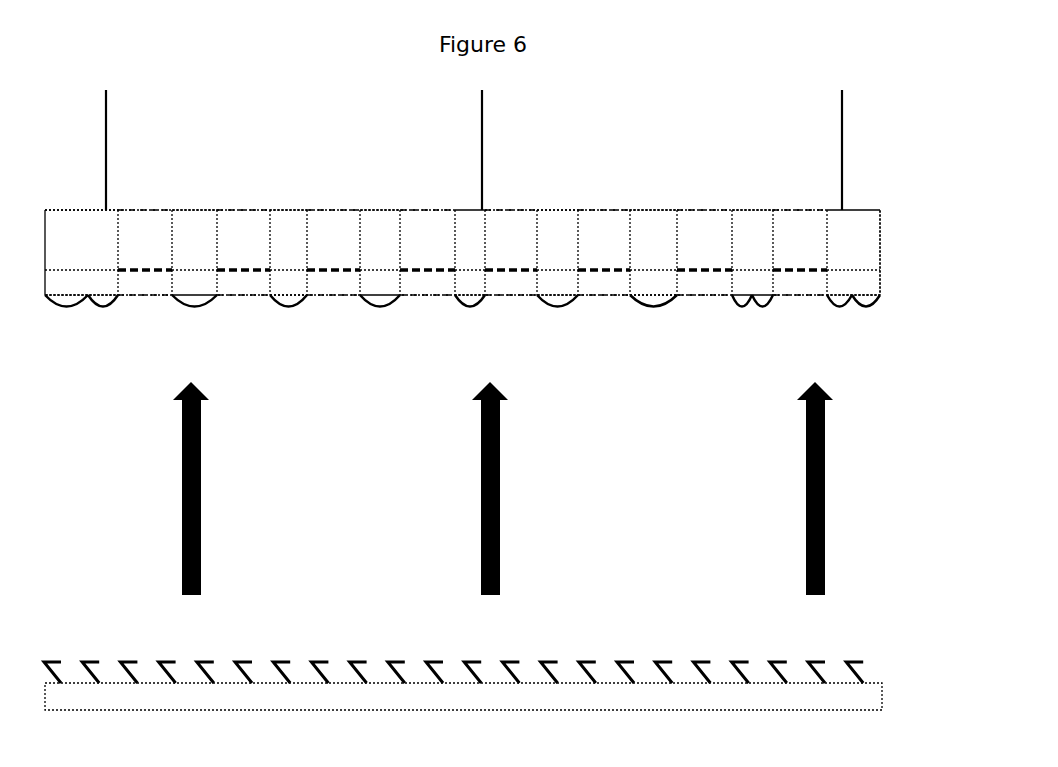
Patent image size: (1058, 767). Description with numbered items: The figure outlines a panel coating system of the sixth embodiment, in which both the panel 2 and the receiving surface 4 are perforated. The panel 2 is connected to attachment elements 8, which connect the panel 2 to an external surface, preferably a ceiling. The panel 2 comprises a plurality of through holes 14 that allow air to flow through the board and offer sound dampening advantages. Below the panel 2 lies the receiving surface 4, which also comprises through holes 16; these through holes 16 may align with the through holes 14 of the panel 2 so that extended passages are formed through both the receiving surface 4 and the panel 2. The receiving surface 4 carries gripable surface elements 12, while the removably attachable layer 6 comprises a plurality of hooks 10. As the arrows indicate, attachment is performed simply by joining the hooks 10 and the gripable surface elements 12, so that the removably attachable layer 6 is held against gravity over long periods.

The panel 2 is at (882, 235).
The receiving surface 4 is at (880, 295).
The removably attachable layer 6 is at (885, 698).
The attachment elements 8 is at (852, 140).
The hooks 10 is at (865, 662).
The gripable surface elements 12 is at (842, 307).
The through holes 14 is at (718, 238).
The through holes 16 is at (707, 287).